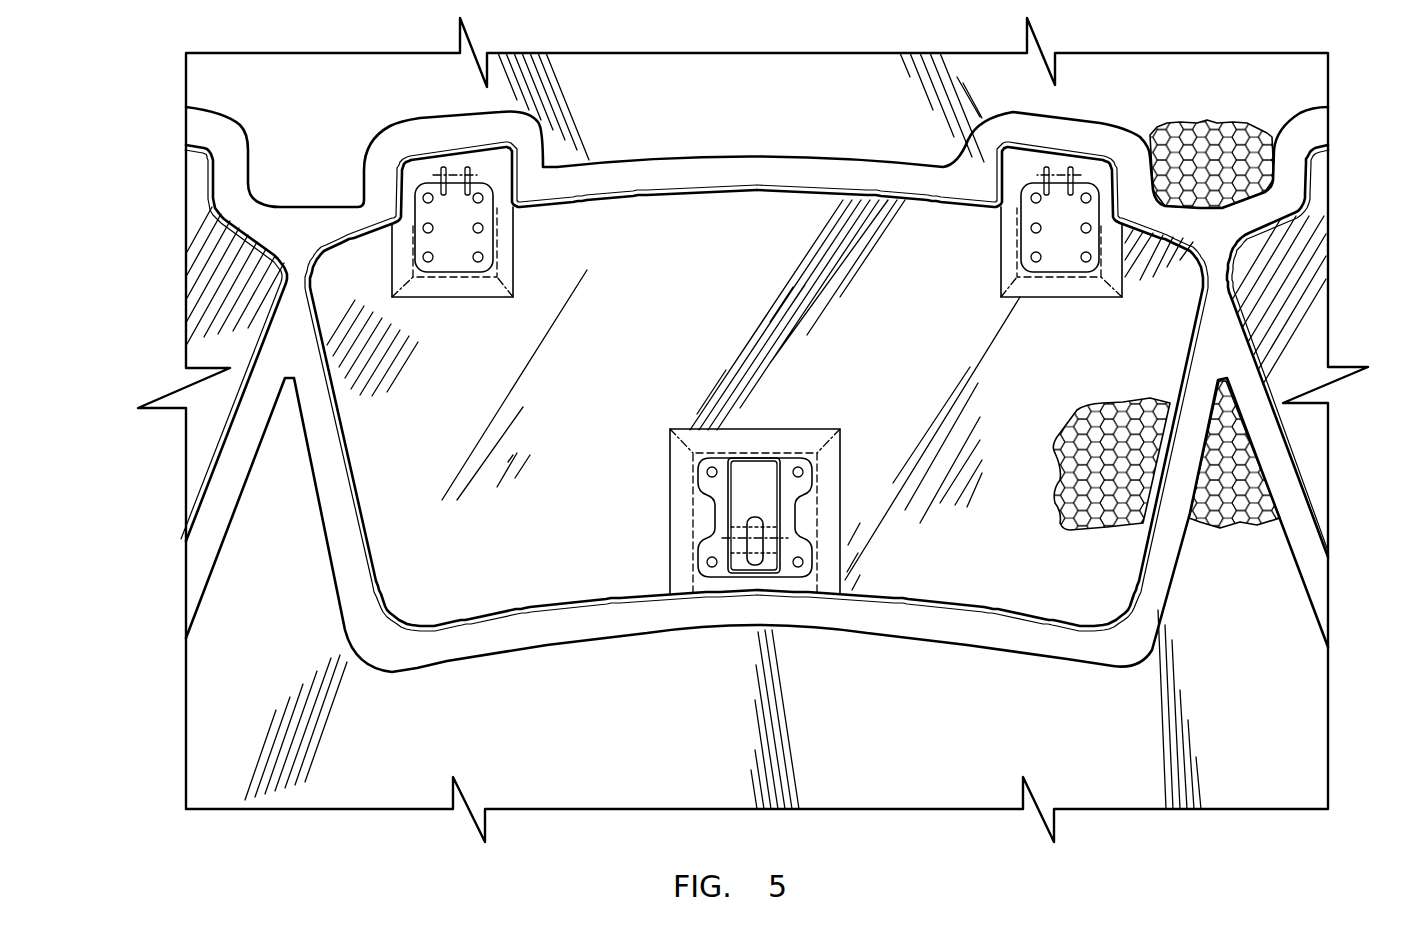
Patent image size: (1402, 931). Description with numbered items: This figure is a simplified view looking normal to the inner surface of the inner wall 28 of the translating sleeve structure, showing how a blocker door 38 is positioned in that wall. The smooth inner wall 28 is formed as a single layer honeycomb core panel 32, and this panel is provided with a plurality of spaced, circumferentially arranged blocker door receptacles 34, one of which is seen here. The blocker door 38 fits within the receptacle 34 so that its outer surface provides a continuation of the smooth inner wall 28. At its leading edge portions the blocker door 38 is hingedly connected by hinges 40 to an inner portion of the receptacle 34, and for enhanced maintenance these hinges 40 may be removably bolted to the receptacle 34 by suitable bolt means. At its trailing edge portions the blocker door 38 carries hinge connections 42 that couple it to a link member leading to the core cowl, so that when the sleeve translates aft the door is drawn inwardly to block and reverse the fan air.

The inner wall 28 is at (570, 811).
The honeycomb core panel 32 is at (1100, 811).
The blocker door receptacle 34 is at (702, 158).
The blocker door 38 is at (668, 309).
The hinge 40 is at (443, 165).
The hinge connection 42 is at (752, 518).